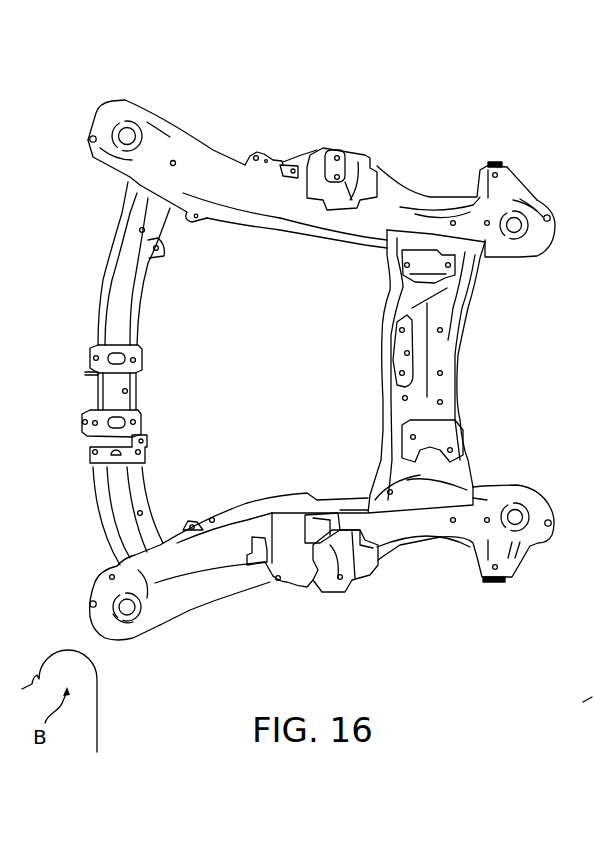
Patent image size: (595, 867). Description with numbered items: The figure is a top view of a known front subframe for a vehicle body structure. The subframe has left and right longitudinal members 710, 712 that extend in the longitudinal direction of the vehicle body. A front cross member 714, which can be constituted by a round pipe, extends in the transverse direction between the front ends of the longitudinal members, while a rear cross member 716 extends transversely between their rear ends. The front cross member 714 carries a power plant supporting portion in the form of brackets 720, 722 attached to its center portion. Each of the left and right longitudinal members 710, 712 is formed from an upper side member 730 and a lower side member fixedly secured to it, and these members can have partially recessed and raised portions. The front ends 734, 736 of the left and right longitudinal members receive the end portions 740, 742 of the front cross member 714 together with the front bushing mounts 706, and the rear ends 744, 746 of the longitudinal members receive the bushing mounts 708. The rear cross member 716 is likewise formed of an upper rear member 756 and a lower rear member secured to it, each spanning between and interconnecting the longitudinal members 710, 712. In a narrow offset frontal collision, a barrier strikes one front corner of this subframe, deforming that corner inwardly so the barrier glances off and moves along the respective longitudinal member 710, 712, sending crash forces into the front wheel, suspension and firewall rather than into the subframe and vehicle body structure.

The front bushing mount 706 is at (131, 122).
The bushing mount 708 is at (514, 236).
The left longitudinal member 710 is at (350, 577).
The right longitudinal member 712 is at (354, 183).
The front cross member 714 is at (123, 368).
The rear cross member 716 is at (421, 371).
The bracket 720 is at (143, 360).
The bracket 722 is at (143, 427).
The upper side member 730 is at (352, 221).
The front end of left longitudinal member 734 is at (168, 603).
The front end of right longitudinal member 736 is at (157, 139).
The end portion of front cross member 740 is at (128, 525).
The end portion of front cross member 742 is at (128, 193).
The rear end of left longitudinal member 744 is at (537, 545).
The rear end of right longitudinal member 746 is at (512, 195).
The upper rear member 756 is at (395, 385).